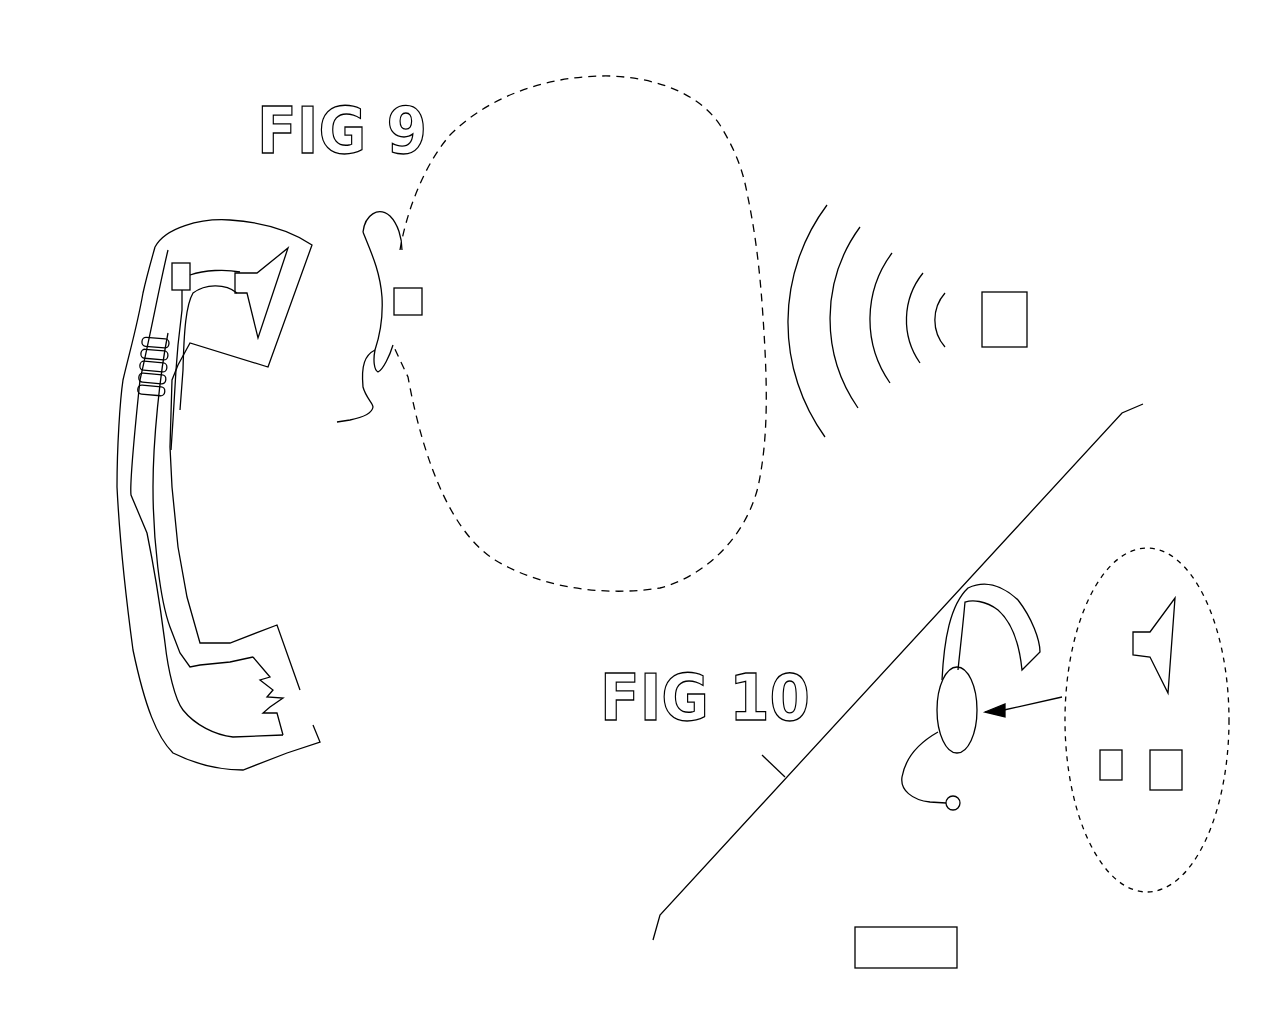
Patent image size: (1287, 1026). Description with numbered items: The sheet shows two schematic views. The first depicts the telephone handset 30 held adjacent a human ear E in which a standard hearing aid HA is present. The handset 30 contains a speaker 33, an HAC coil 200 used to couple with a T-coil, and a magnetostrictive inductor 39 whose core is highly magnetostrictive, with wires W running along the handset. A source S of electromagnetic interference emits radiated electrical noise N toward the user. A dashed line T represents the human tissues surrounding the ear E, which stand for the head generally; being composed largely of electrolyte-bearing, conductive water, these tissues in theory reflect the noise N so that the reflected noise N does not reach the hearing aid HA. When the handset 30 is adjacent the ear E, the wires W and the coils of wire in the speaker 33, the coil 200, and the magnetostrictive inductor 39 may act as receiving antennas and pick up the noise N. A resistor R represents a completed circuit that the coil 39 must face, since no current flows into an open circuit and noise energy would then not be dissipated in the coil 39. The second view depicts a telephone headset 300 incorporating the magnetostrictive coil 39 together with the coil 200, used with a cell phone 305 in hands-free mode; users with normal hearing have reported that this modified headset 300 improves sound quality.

In FIG. 9, the telephone handset 30 is at (173, 490).
In FIG. 9, the HAC coil 200 is at (182, 263).
In FIG. 10, the HAC coil 200 is at (1100, 763).
In FIG. 9, the speaker 33 is at (272, 262).
In FIG. 10, the speaker 33 is at (1160, 615).
In FIG. 9, the magnetostrictive inductor 39 is at (122, 323).
In FIG. 10, the magnetostrictive inductor 39 is at (1182, 770).
In FIG. 9, the wires W is at (157, 302).
In FIG. 9, the resistor R is at (316, 708).
In FIG. 9, the human ear E is at (359, 327).
In FIG. 9, the hearing aid HA is at (422, 300).
In FIG. 9, the human tissues T is at (750, 190).
In FIG. 9, the radiated electrical noise N is at (891, 450).
In FIG. 9, the source of EMI S is at (1005, 347).
In FIG. 10, the telephone headset 300 is at (880, 750).
In FIG. 10, the cell phone 305 is at (906, 947).